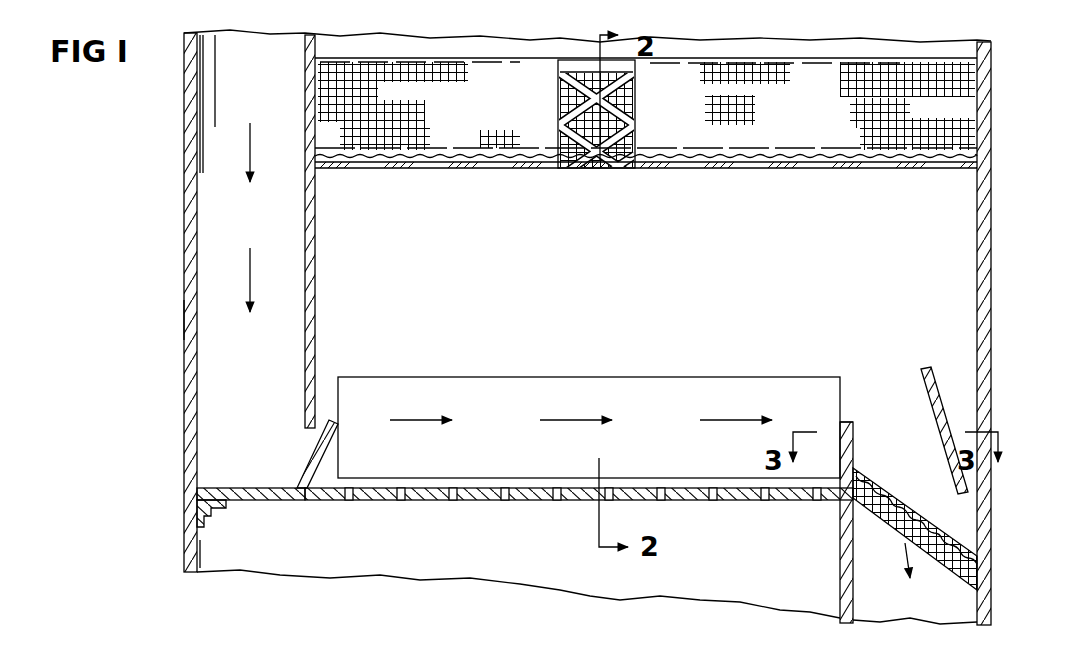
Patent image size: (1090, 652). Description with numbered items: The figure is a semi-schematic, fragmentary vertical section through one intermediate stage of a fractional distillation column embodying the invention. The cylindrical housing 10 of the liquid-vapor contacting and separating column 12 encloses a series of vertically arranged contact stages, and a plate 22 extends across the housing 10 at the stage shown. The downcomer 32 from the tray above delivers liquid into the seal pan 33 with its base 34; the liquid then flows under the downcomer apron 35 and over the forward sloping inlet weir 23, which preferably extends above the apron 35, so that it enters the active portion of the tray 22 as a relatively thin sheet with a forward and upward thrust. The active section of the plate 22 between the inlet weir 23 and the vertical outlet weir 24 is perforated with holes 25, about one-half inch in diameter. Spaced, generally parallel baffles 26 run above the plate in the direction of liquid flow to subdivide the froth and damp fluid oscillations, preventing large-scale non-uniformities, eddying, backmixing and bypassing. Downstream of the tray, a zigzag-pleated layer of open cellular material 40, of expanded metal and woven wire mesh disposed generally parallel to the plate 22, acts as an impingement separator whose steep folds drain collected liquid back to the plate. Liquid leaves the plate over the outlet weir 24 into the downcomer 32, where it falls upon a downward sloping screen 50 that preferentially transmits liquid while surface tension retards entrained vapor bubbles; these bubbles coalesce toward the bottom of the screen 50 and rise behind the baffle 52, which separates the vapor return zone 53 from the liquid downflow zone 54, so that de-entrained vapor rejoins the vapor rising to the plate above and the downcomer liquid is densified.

The cylindrical housing 10 is at (184, 238).
The liquid-vapor contacting and separating column 12 is at (178, 344).
The plate 22 is at (731, 500).
The forward sloping inlet weir 23 is at (326, 426).
The vertical outlet weir 24 is at (895, 470).
The holes 25 is at (706, 488).
The baffles 26 is at (602, 377).
The downcomer 32 is at (258, 84).
The seal pan 33 is at (239, 476).
The base 34 is at (272, 488).
The downcomer apron 35 is at (304, 272).
The open cellular material 40 is at (690, 123).
The downward sloping screen 50 is at (920, 492).
The baffle 52 is at (940, 424).
The vapor return zone 53 is at (944, 372).
The liquid downflow zone 54 is at (868, 432).